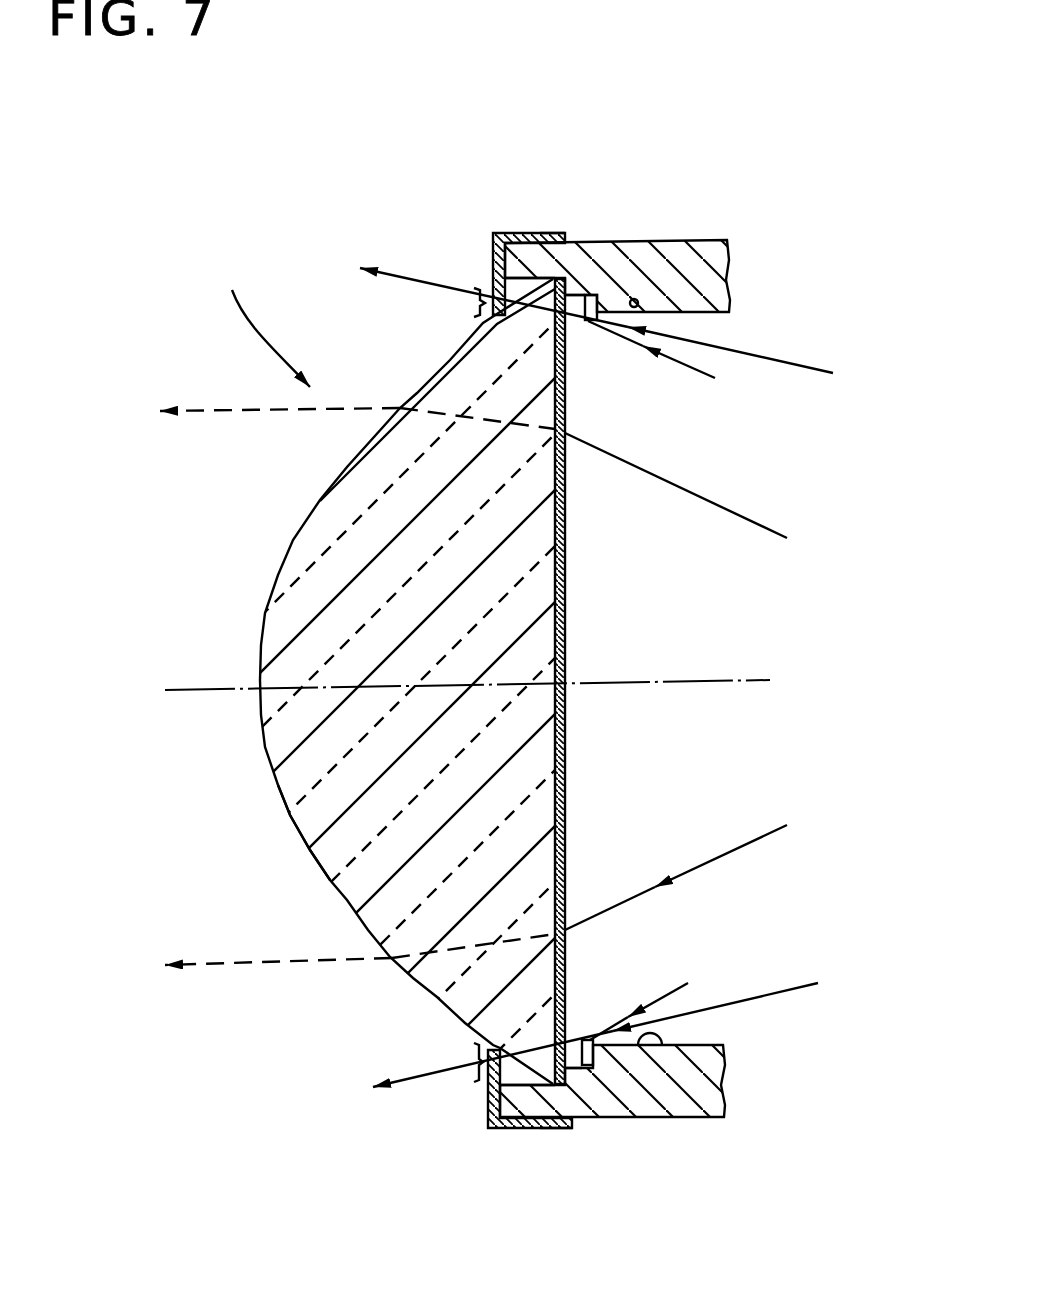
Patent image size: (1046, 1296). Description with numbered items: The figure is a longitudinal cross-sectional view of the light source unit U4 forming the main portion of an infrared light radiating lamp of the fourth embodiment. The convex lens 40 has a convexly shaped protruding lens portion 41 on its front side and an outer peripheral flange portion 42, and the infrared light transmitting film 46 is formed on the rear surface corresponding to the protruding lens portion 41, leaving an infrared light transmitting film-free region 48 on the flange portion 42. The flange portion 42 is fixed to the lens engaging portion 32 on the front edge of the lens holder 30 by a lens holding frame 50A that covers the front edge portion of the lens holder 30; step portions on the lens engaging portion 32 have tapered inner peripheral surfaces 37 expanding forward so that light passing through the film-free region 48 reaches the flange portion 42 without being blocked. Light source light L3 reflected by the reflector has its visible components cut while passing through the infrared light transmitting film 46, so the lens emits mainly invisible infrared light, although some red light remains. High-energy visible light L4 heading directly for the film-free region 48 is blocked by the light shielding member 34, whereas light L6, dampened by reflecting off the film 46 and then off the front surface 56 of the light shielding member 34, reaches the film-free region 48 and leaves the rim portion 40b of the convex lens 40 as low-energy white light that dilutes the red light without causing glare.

The lens holder 30 is at (643, 240).
The lens engaging portion 32 is at (520, 235).
The light shielding member 34 is at (592, 328).
The tapered inner peripheral surface 37 is at (638, 300).
The convex lens 40 is at (300, 548).
The rim portion 40b is at (478, 306).
The protruding lens portion 41 is at (297, 828).
The flange portion 42 is at (547, 1128).
The infrared light transmitting film 46 is at (566, 598).
The infrared light transmitting film-free region 48 is at (585, 293).
The lens holding frame 50A is at (547, 232).
The front surface of the light shielding member 56 is at (510, 280).
The light source light reflected by the reflector L3 is at (440, 689).
The light source light with high energy density L4 is at (632, 677).
The light source light with reduced energy density L6 is at (686, 680).
The lens unit U4 is at (248, 308).